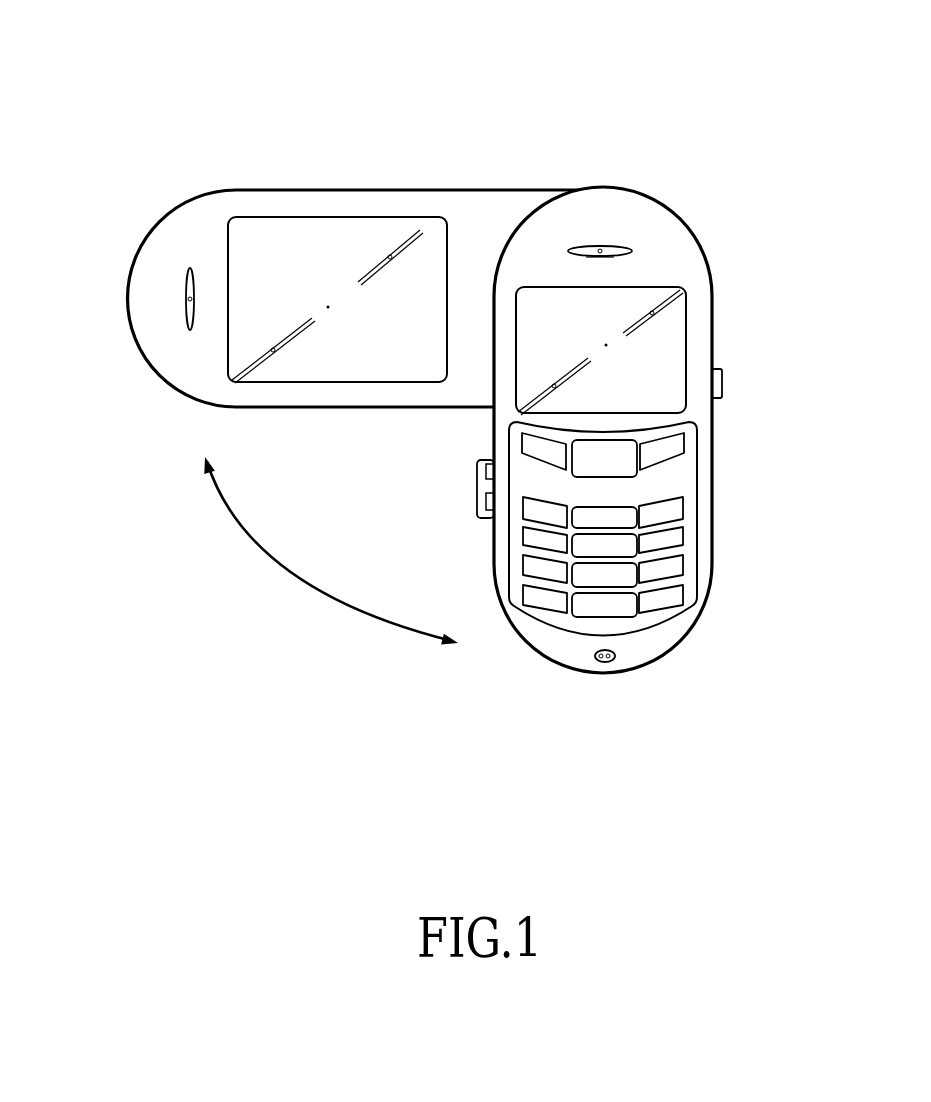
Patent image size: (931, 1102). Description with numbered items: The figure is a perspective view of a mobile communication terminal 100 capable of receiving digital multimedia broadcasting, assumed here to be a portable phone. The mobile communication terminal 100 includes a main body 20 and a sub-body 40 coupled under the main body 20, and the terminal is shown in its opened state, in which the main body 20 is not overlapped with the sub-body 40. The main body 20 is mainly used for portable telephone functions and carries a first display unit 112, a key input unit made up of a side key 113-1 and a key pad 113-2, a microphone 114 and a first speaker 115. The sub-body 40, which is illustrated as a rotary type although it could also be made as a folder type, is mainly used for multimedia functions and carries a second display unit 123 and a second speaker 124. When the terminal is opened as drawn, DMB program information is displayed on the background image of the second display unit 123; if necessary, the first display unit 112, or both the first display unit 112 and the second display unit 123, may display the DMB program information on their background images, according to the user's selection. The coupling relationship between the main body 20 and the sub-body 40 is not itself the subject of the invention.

The mobile communication terminal 100 is at (518, 36).
The sub-body 40 is at (317, 265).
The main body 20 is at (591, 446).
The second display unit 123 is at (337, 217).
The second speaker 124 is at (187, 298).
The first speaker 115 is at (600, 246).
The first display unit 112 is at (686, 323).
The side key 113-1 is at (722, 383).
The key pad 113-2 is at (697, 505).
The microphone 114 is at (605, 663).